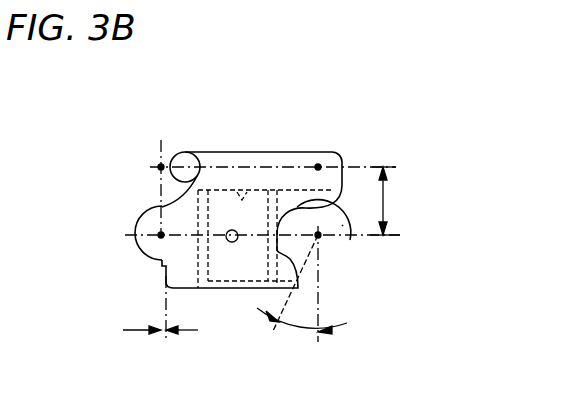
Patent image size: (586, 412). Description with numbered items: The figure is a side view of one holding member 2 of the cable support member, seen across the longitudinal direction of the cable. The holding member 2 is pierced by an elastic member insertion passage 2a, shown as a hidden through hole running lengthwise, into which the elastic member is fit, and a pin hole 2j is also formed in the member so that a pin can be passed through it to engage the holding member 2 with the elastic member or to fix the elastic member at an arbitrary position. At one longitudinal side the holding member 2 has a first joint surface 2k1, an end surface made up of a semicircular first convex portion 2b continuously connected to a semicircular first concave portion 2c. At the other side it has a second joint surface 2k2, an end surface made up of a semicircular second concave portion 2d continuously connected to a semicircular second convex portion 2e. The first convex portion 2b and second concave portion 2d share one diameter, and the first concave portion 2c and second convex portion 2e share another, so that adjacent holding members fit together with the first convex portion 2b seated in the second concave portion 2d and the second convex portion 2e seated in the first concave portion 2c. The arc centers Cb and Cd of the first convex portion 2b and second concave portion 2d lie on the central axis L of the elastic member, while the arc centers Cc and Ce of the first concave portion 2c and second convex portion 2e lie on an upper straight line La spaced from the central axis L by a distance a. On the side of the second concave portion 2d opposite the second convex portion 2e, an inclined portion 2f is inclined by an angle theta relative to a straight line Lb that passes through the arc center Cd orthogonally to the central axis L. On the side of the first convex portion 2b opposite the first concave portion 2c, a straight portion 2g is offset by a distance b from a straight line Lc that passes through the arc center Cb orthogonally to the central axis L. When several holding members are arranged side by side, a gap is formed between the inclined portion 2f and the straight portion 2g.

The holding member 2 is at (256, 217).
The elastic member insertion passage (through hole) 2a is at (240, 190).
The first convex portion 2b is at (140, 238).
The first concave portion 2c is at (184, 152).
The second concave portion 2d is at (277, 251).
The second convex portion 2e is at (341, 151).
The inclined portion 2f is at (320, 279).
The straight portion 2g is at (162, 268).
The pin hole 2j is at (229, 243).
The first joint surface 2k1 is at (158, 212).
The second joint surface 2k2 is at (342, 225).
The arc center of first convex portion Cb is at (150, 216).
The arc center of first concave portion Cc is at (159, 166).
The arc center of second concave portion Cd is at (322, 239).
The arc center of second convex portion Ce is at (318, 165).
The central axis L is at (400, 234).
The straight line La is at (370, 157).
The straight line Lb is at (347, 323).
The straight line Lc is at (160, 292).
The distance a is at (390, 201).
The distance b is at (160, 340).